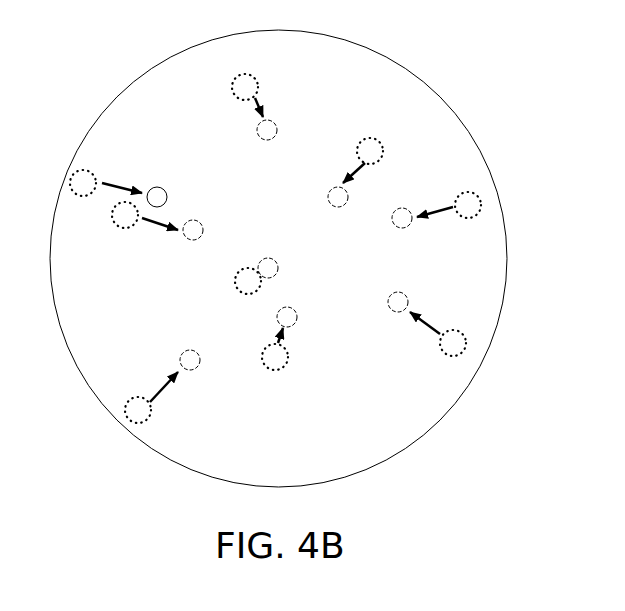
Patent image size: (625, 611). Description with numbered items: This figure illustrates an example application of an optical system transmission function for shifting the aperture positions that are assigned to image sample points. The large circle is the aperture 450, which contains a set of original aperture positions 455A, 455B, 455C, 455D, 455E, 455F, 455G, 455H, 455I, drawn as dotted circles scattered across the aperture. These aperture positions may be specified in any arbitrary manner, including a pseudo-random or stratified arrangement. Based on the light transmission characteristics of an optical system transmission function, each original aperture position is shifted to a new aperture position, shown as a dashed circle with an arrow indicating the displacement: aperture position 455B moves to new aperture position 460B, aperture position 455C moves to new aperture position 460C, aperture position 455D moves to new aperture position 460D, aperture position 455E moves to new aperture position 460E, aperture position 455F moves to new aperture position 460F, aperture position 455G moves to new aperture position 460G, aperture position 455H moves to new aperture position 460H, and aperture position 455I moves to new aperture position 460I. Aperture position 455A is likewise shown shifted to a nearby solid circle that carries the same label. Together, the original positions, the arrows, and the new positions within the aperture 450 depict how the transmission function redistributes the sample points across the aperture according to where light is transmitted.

The aperture 450 is at (108, 110).
The aperture position 455A is at (92, 173).
The aperture position 455B is at (260, 88).
The aperture position 455C is at (385, 153).
The aperture position 455D is at (465, 208).
The aperture position 455E is at (453, 345).
The aperture position 455F is at (282, 357).
The aperture position 455G is at (143, 417).
The aperture position 455H is at (242, 278).
The aperture position 455I is at (110, 221).
The new aperture position 460B is at (282, 128).
The new aperture position 460C is at (330, 195).
The new aperture position 460D is at (405, 223).
The new aperture position 460E is at (392, 308).
The new aperture position 460F is at (278, 317).
The new aperture position 460G is at (187, 357).
The new aperture position 460H is at (270, 262).
The new aperture position 460I is at (197, 234).